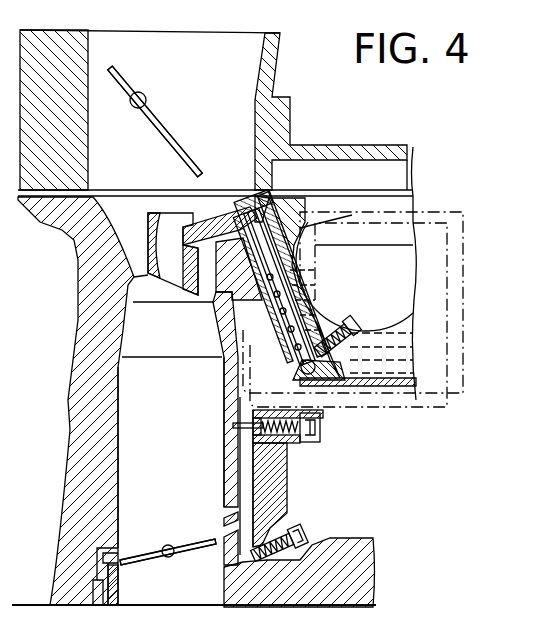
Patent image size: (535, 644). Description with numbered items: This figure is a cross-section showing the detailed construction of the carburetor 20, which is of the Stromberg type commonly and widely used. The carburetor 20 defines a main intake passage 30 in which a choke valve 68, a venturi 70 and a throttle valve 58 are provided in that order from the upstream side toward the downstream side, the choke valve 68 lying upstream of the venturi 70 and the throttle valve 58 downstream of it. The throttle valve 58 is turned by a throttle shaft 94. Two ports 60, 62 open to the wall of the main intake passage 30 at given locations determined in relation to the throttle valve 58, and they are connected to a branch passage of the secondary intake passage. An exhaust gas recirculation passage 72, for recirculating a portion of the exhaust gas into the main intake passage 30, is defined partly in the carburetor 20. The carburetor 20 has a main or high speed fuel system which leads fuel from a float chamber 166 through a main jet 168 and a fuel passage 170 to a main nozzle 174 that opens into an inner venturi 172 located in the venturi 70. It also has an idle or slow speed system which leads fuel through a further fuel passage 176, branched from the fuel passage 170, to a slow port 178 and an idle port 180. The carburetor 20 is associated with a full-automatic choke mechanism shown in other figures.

The carburetor 20 is at (338, 453).
The main intake passage 30 is at (190, 405).
The throttle valve 58 is at (150, 552).
The port 60 is at (121, 552).
The port 62 is at (115, 568).
The choke valve 68 is at (180, 142).
The venturi 70 is at (147, 290).
The exhaust gas recirculation passage 72 is at (72, 237).
The throttle shaft 94 is at (171, 546).
The float chamber 166 is at (380, 200).
The main jet 168 is at (347, 342).
The fuel passage 170 is at (281, 346).
The inner venturi 172 is at (188, 290).
The main nozzle 174 is at (216, 238).
The fuel passage 176 is at (246, 470).
The slow port 178 is at (228, 515).
The idle port 180 is at (222, 572).